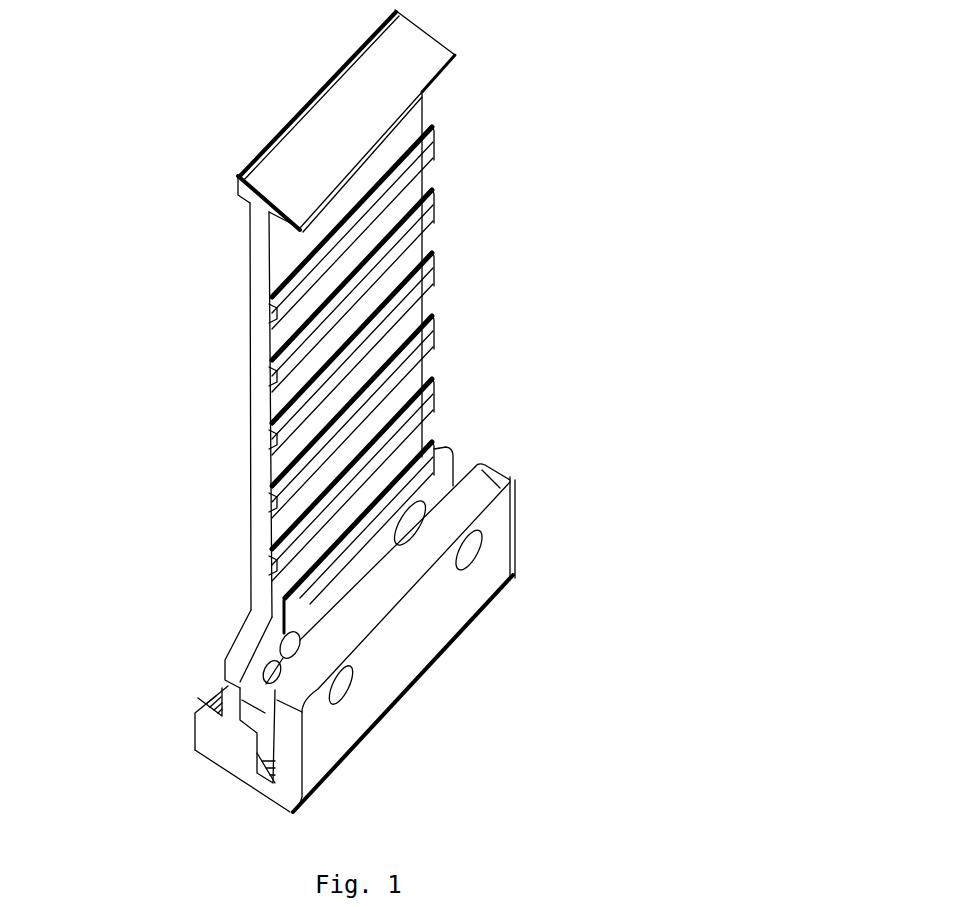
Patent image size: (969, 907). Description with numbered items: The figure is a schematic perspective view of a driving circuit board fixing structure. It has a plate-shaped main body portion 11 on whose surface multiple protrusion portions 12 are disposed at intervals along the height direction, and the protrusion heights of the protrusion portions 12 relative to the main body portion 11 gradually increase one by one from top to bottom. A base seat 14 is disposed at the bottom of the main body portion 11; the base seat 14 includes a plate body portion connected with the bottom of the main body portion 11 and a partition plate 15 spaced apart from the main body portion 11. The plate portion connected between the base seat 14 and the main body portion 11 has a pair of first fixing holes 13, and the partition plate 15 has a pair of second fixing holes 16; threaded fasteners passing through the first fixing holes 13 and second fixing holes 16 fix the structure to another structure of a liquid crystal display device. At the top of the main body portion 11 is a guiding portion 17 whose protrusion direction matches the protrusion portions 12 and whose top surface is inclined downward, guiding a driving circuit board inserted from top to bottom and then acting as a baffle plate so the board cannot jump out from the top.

The main body portion 11 is at (263, 389).
The protrusion portions 12 is at (395, 247).
The first fixing holes 13 is at (295, 660).
The base seat 14 is at (222, 760).
The partition plate 15 is at (490, 542).
The second fixing holes 16 is at (352, 693).
The guiding portion 17 is at (387, 95).